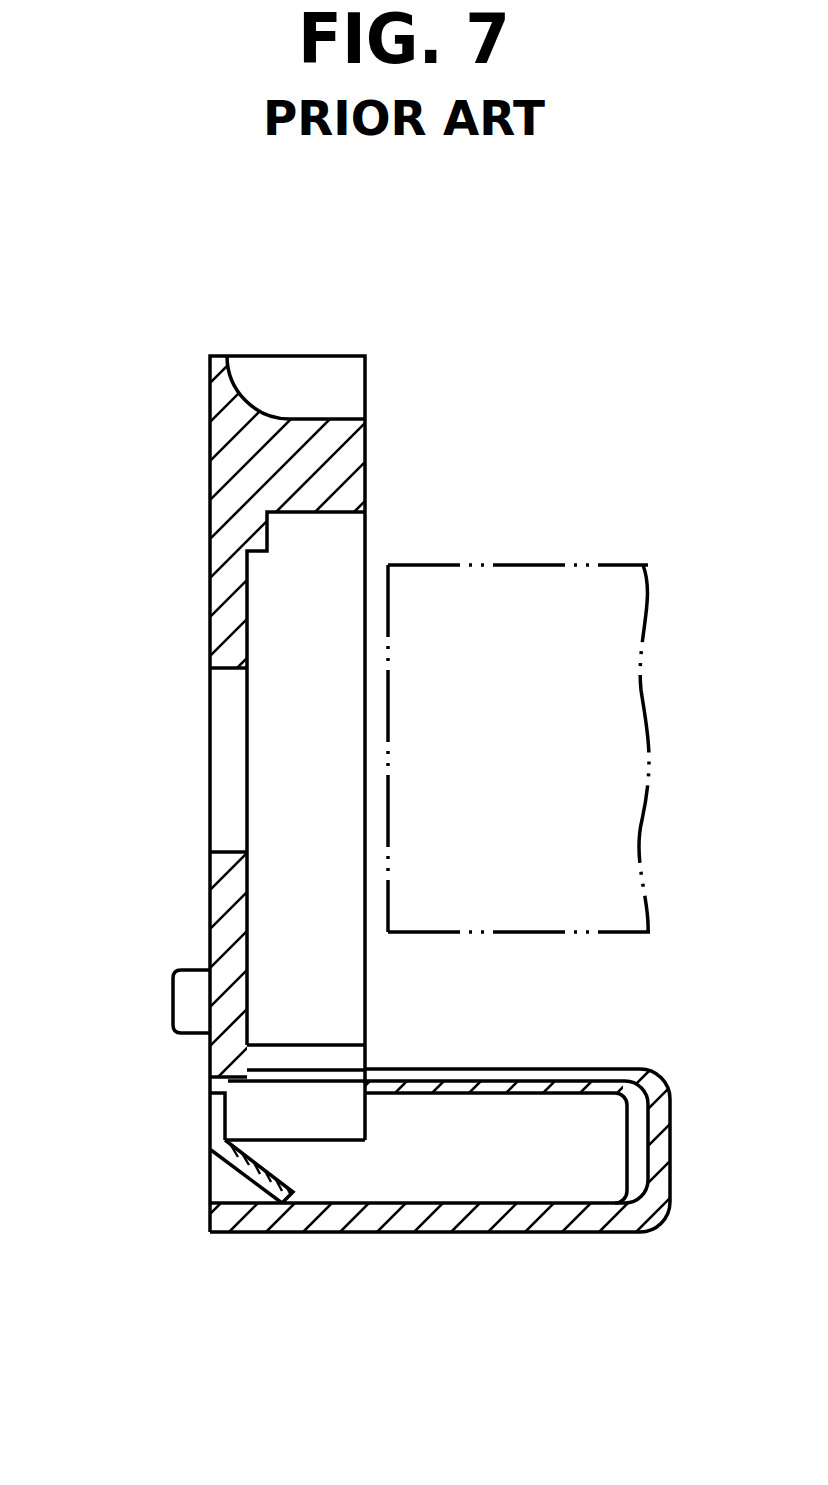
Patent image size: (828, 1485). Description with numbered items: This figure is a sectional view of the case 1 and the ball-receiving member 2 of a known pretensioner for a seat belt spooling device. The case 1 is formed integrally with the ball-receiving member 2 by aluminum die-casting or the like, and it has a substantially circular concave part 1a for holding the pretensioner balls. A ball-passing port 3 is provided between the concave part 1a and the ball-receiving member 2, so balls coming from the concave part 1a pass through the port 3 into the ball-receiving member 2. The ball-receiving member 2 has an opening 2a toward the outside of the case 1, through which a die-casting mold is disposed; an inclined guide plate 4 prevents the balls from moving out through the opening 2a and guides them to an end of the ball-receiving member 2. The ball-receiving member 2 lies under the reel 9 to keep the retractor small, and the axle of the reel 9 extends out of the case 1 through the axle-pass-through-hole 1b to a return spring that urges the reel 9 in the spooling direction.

The case 1 is at (200, 440).
The concave part 1a is at (323, 639).
The axle-pass-through-hole 1b is at (226, 707).
The ball-receiving member 2 is at (367, 1238).
The opening 2a is at (233, 1175).
The ball-passing port 3 is at (303, 1095).
The inclined guide plate 4 is at (205, 1120).
The reel 9 is at (455, 562).